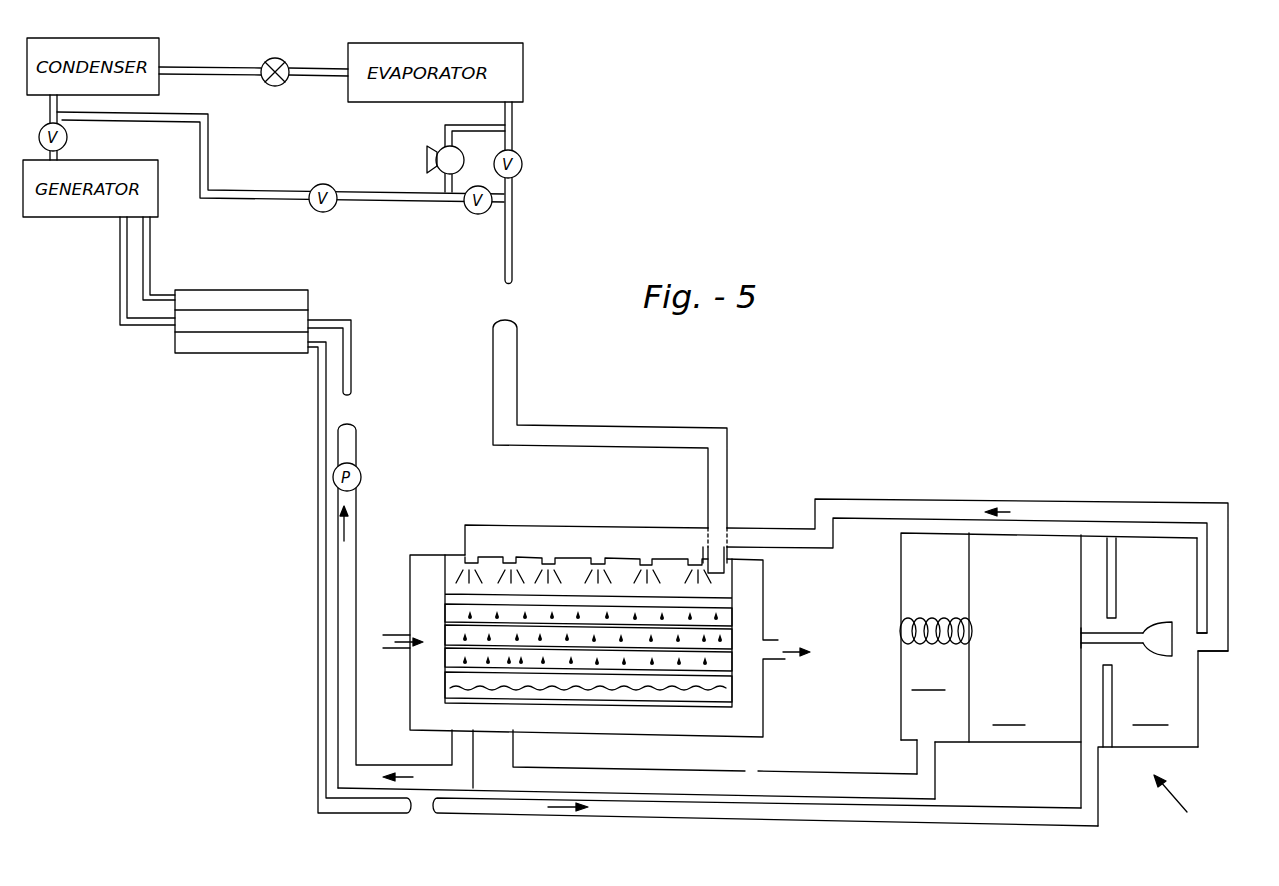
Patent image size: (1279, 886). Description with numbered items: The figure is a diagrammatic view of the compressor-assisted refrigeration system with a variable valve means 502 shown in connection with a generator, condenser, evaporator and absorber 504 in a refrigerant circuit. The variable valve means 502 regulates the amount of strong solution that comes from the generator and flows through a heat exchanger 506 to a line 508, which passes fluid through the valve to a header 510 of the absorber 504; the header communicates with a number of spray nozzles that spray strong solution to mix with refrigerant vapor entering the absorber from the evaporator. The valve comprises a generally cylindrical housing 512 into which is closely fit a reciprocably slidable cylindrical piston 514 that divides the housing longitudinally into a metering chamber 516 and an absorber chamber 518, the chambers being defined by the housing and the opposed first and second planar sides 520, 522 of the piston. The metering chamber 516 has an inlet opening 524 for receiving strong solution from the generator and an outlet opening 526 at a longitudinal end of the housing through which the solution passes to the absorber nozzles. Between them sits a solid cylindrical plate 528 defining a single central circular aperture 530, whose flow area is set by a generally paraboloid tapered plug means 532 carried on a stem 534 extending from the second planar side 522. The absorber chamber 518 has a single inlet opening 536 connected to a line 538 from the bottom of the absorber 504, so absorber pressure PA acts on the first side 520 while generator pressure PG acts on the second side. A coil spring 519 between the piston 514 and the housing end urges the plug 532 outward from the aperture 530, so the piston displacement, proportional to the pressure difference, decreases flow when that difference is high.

The variable valve means 502 is at (1192, 810).
The absorber 504 is at (763, 604).
The heat exchanger 506 is at (297, 290).
The line 508 is at (808, 813).
The header 510 is at (595, 508).
The housing 512 is at (901, 562).
The piston 514 is at (1008, 723).
The metering chamber 516 is at (1148, 765).
The absorber chamber 518 is at (923, 705).
The coil spring 519 is at (950, 608).
The first planar side 520 is at (970, 576).
The second planar side 522 is at (1083, 700).
The inlet opening 524 is at (1092, 748).
The outlet opening 526 is at (1204, 647).
The cylindrical plate 528 is at (1117, 578).
The aperture 530 is at (1113, 625).
The tapered plug means 532 is at (1162, 650).
The stem 534 is at (1083, 638).
The inlet opening 536 is at (920, 743).
The line 538 is at (750, 782).